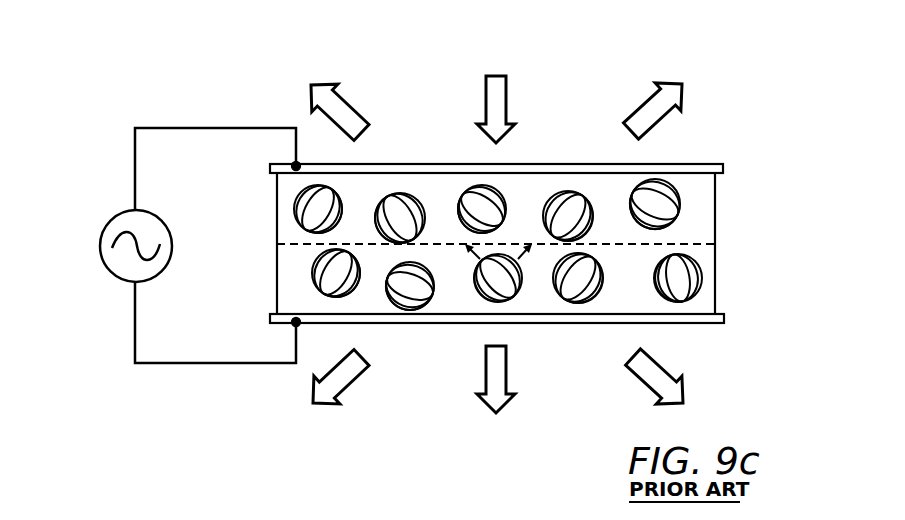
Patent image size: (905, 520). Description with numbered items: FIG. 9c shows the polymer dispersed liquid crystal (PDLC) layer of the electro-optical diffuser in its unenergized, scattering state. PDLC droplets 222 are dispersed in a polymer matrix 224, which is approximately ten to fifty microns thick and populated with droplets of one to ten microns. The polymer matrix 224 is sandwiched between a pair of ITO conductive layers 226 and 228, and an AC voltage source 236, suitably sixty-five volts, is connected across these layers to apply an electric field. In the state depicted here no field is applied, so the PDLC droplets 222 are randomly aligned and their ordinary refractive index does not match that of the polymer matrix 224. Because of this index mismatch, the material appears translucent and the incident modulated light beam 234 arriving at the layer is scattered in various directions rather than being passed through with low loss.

The PDLC droplets 222 is at (702, 191).
The polymer matrix 224 is at (717, 268).
The conductive layer 226 is at (712, 163).
The conductive layer 228 is at (725, 318).
The modulated light beam 234 is at (506, 92).
The AC voltage source 236 is at (118, 212).